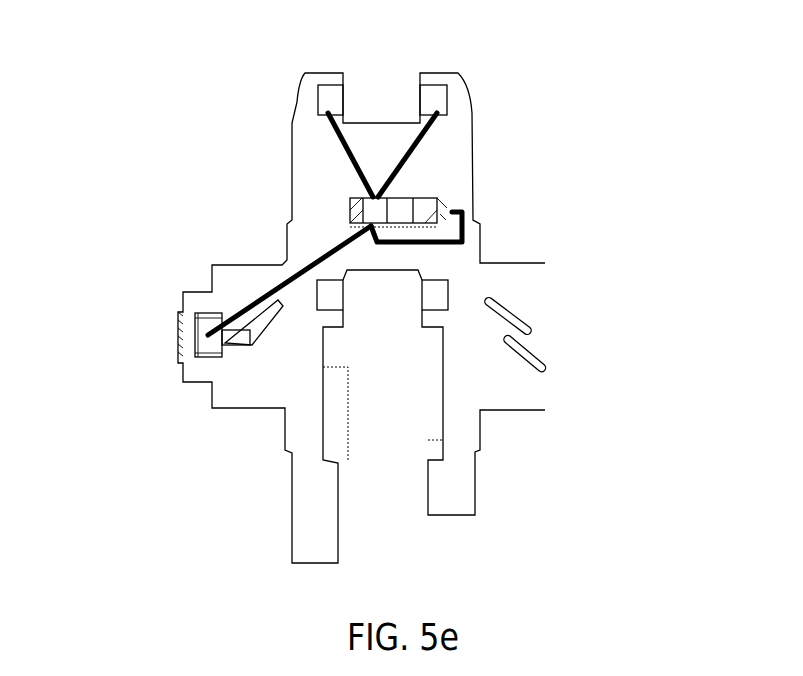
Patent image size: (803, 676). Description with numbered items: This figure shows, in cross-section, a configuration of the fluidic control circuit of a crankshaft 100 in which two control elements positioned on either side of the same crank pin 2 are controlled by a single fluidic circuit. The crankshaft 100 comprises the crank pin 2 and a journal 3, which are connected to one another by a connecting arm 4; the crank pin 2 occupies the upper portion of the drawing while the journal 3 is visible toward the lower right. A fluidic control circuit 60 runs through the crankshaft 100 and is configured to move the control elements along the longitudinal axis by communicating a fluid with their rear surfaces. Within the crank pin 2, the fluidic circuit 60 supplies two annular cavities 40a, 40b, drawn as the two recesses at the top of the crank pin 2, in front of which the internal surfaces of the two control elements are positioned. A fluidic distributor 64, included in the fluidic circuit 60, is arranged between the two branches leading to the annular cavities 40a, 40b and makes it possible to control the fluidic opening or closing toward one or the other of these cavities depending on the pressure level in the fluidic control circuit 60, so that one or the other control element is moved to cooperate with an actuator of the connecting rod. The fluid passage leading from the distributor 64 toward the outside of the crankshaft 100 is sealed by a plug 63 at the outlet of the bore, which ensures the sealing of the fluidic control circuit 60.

The crankshaft 100 is at (644, 74).
The crank pin 2 is at (410, 182).
The journal 3 is at (532, 293).
The connecting arm 4 is at (300, 131).
The annular cavity 40a is at (324, 99).
The annular cavity 40b is at (435, 103).
The fluidic control circuit 60 is at (92, 118).
The plug 63 is at (313, 267).
The fluidic distributor 64 is at (365, 215).